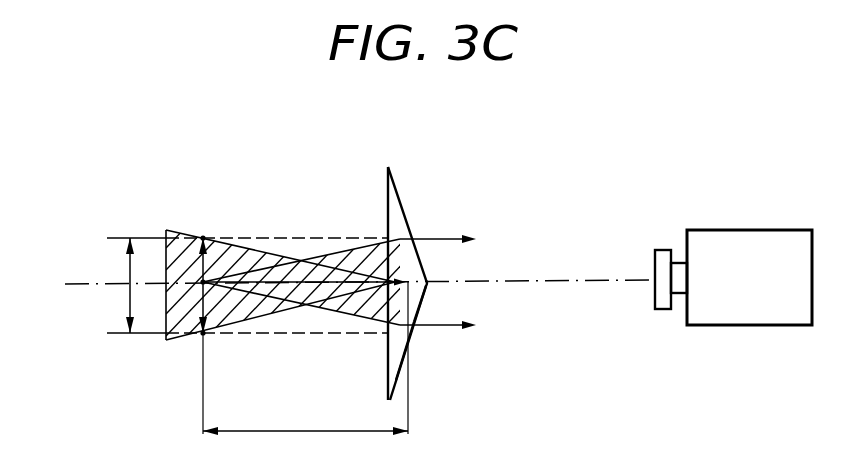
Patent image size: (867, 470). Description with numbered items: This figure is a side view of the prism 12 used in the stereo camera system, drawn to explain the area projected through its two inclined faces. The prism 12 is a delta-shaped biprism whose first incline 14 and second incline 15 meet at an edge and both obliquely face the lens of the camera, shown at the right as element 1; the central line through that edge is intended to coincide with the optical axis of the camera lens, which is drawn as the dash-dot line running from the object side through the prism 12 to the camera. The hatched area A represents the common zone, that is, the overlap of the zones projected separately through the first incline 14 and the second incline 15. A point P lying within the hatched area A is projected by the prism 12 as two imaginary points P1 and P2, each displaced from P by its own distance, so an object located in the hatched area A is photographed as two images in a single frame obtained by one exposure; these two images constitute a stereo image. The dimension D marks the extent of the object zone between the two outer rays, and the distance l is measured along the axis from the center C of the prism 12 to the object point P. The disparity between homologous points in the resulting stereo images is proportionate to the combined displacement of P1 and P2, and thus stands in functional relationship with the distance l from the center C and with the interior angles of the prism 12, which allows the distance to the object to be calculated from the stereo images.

The camera 1 is at (701, 243).
The first incline 14 is at (408, 222).
The prism 12 is at (413, 302).
The second incline 15 is at (410, 340).
The center of the prism C is at (428, 283).
The hatched area A is at (265, 260).
The point P is at (166, 297).
The imaginary point P1 is at (203, 238).
The imaginary point P2 is at (203, 340).
The object height D is at (119, 285).
The distance l is at (305, 358).